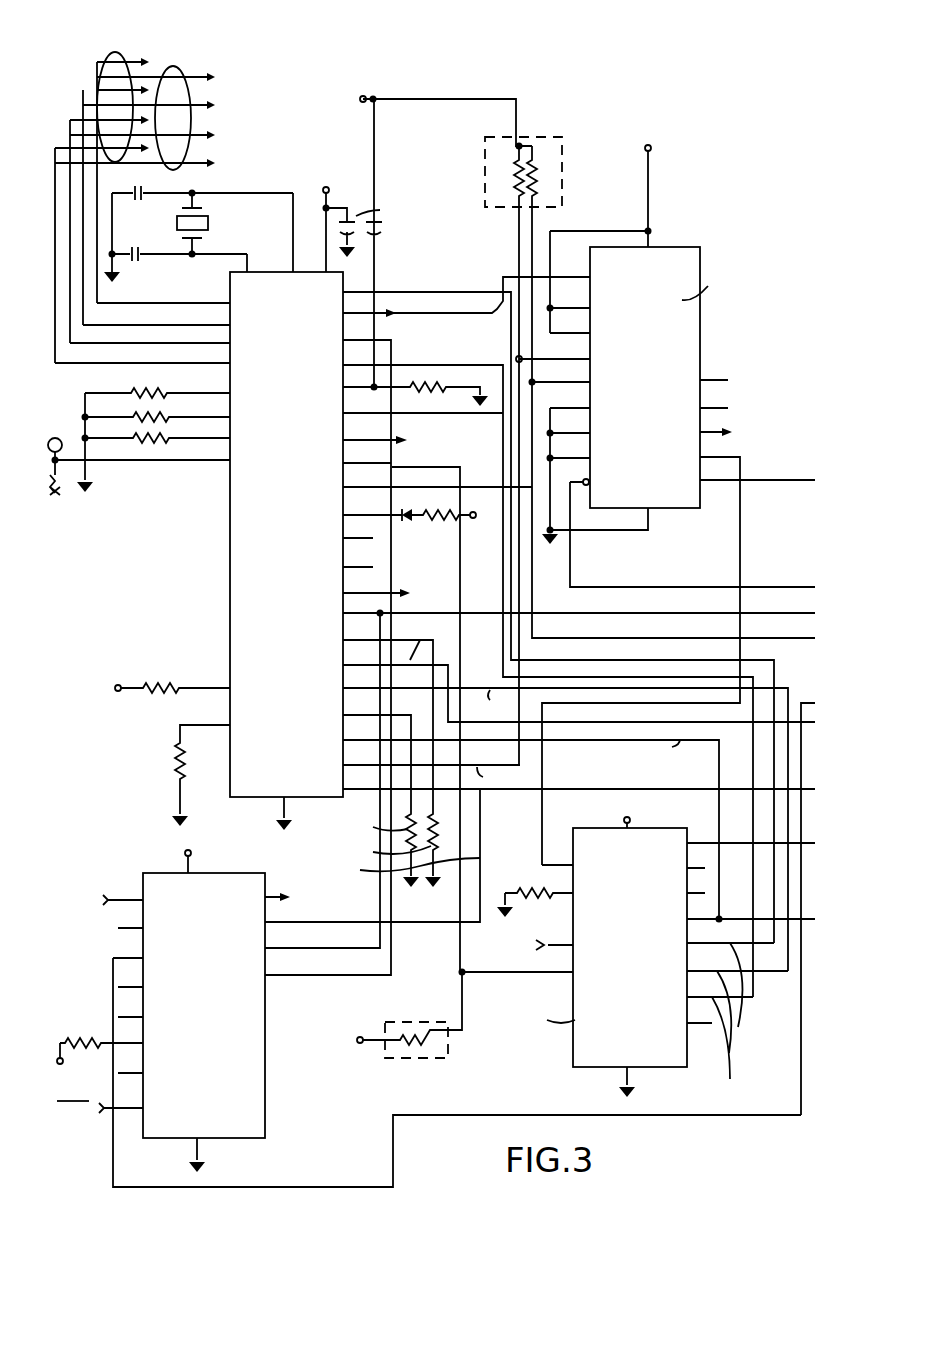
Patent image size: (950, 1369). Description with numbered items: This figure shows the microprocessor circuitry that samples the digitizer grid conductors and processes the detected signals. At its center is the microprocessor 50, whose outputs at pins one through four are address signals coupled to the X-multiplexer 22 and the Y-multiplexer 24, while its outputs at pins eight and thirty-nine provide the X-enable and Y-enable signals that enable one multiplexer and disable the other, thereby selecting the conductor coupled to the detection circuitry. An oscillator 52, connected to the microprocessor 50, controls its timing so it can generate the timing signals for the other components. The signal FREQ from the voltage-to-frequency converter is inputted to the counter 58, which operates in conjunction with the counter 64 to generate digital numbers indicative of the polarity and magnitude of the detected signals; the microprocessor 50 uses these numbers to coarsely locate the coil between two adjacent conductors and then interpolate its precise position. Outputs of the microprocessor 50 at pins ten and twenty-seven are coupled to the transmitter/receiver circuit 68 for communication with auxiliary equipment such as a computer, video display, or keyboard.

The X-multiplexer 22 is at (112, 50).
The Y-multiplexer 24 is at (168, 70).
The microprocessor 50 is at (297, 170).
The oscillator 52 is at (212, 176).
The counter 64 is at (698, 182).
The counter 58 is at (552, 1040).
The transmitter/receiver circuit 68 is at (281, 1081).